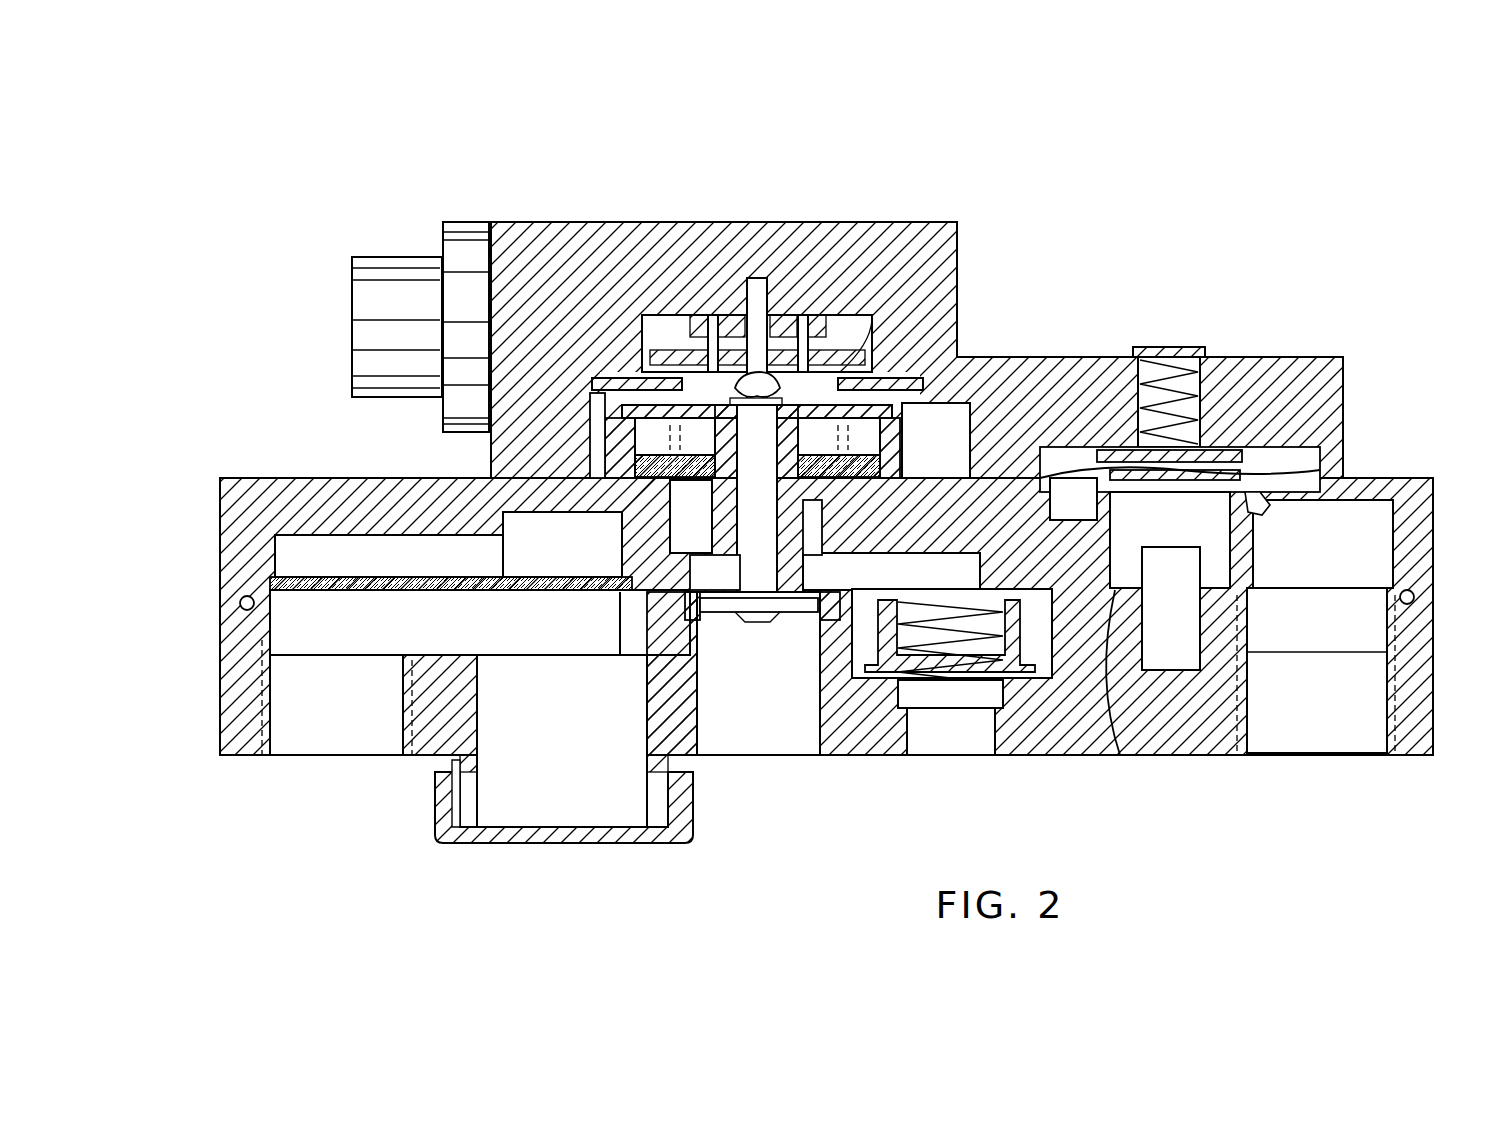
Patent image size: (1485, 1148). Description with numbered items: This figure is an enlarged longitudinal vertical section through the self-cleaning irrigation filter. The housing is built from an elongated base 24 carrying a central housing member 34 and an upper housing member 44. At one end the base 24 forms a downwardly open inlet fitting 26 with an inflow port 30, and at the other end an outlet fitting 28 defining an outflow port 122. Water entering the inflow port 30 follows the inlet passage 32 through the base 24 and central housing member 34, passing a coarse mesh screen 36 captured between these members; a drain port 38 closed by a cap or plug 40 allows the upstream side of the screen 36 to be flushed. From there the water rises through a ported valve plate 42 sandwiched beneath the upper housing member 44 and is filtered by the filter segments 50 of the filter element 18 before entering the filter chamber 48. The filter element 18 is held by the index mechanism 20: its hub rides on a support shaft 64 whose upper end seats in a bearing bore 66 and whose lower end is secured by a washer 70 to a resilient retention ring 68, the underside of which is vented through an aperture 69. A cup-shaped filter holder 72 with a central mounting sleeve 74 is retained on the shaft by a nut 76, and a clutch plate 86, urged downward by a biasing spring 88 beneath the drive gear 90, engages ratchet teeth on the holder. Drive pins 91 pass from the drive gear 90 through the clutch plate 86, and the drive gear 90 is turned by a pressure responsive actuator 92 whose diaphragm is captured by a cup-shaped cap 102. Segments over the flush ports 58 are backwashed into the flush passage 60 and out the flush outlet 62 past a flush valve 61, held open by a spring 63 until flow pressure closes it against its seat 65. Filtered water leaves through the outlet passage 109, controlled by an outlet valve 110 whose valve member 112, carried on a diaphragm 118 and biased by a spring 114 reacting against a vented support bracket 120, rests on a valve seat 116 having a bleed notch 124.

The filter element 18 is at (625, 505).
The index mechanism 20 is at (840, 308).
The base 24 is at (240, 695).
The inlet fitting 26 is at (272, 745).
The outlet fitting 28 is at (1250, 745).
The inflow port 30 is at (360, 720).
The inlet passage 32 is at (362, 535).
The central housing member 34 is at (305, 480).
The coarse mesh screen 36 is at (370, 585).
The drain port 38 is at (485, 820).
The cap or plug 40 is at (578, 843).
The ported valve plate 42 is at (565, 505).
The upper housing member 44 is at (560, 222).
The filter chamber 48 is at (940, 430).
The filter segments 50 is at (718, 492).
The flush ports 58 is at (915, 508).
The flush passage 60 is at (980, 560).
The flush valve 61 is at (880, 640).
The flush outlet 62 is at (930, 745).
The spring 63 is at (970, 715).
The support shaft 64 is at (680, 575).
The seat 65 is at (880, 690).
The bearing bore 66 is at (760, 280).
The resilient retention ring 68 is at (652, 655).
The aperture 69 is at (825, 760).
The washer 70 is at (735, 620).
The filter holder 72 is at (615, 395).
The central mounting sleeve 74 is at (728, 437).
The nut 76 is at (757, 502).
The clutch plate 86 is at (840, 360).
The biasing spring 88 is at (760, 330).
The drive gear 90 is at (650, 380).
The drive pins 91 is at (712, 318).
The pressure responsive actuator 92 is at (410, 245).
The cup-shaped cap 102 is at (362, 262).
The outlet passage 109 is at (1120, 755).
The outlet valve 110 is at (1240, 455).
The valve member 112 is at (1125, 490).
The spring 114 is at (1200, 450).
The valve seat 116 is at (1268, 510).
The diaphragm 118 is at (1320, 455).
The vented support bracket 120 is at (1170, 347).
The outflow port 122 is at (1345, 715).
The bleed notch 124 is at (1125, 530).